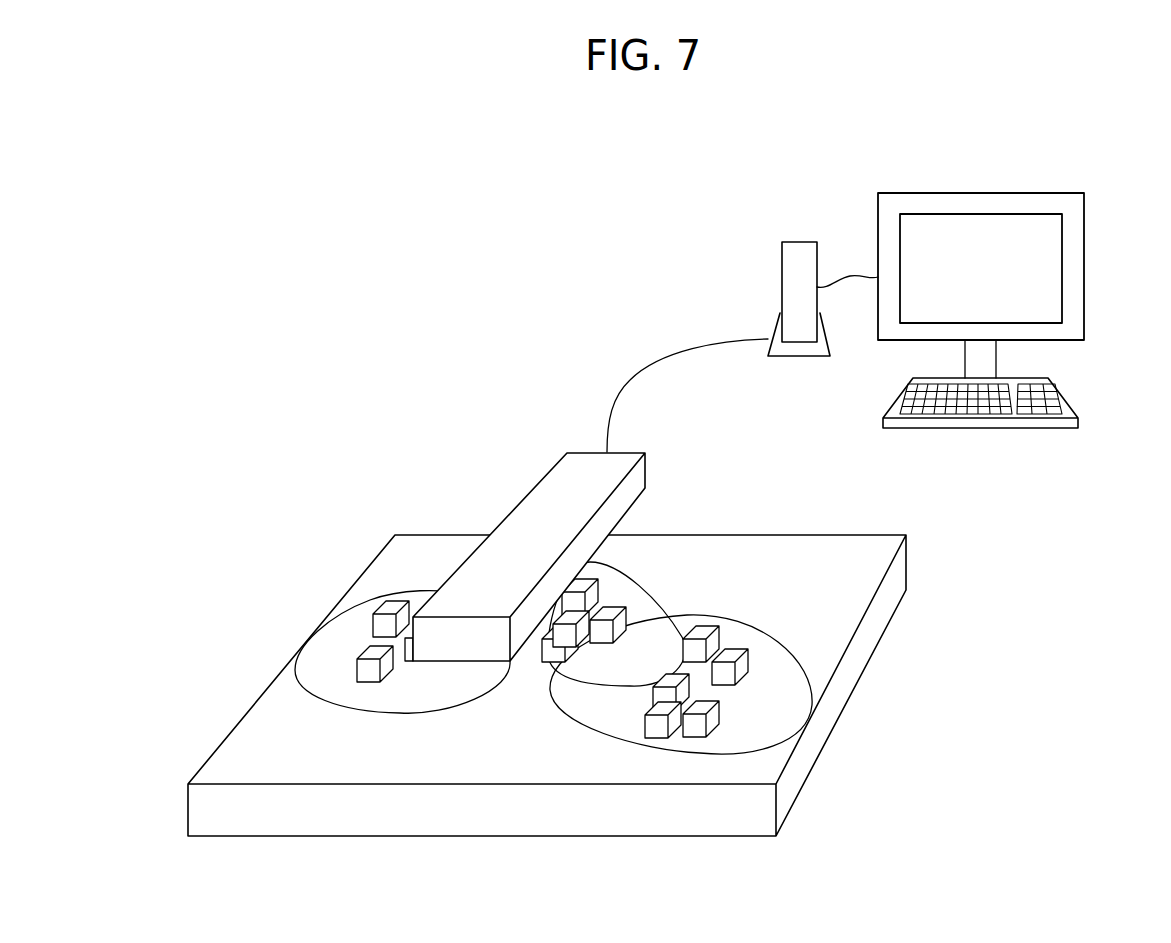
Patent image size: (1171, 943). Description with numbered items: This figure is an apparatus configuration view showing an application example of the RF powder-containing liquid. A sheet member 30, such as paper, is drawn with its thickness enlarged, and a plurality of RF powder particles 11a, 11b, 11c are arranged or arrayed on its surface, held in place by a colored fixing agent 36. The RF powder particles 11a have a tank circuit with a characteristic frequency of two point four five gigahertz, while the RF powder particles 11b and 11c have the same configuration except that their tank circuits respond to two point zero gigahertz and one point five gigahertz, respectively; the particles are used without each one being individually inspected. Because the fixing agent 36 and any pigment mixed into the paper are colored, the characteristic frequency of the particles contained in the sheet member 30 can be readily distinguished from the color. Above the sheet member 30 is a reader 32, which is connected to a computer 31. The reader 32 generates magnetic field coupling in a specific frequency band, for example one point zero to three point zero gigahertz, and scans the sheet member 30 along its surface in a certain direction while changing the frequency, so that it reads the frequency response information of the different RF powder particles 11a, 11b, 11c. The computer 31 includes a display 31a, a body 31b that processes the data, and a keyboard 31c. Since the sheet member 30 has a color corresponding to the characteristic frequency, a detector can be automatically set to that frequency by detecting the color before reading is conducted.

The RF powder particle 11a is at (367, 672).
The RF powder particle 11b is at (553, 655).
The RF powder particle 11c is at (722, 677).
The sheet member 30 is at (818, 733).
The computer 31 is at (946, 279).
The display 31a is at (1047, 252).
The body 31b is at (790, 260).
The keyboard 31c is at (1065, 395).
The reader 32 is at (523, 498).
The fixing agent 36 is at (323, 655).